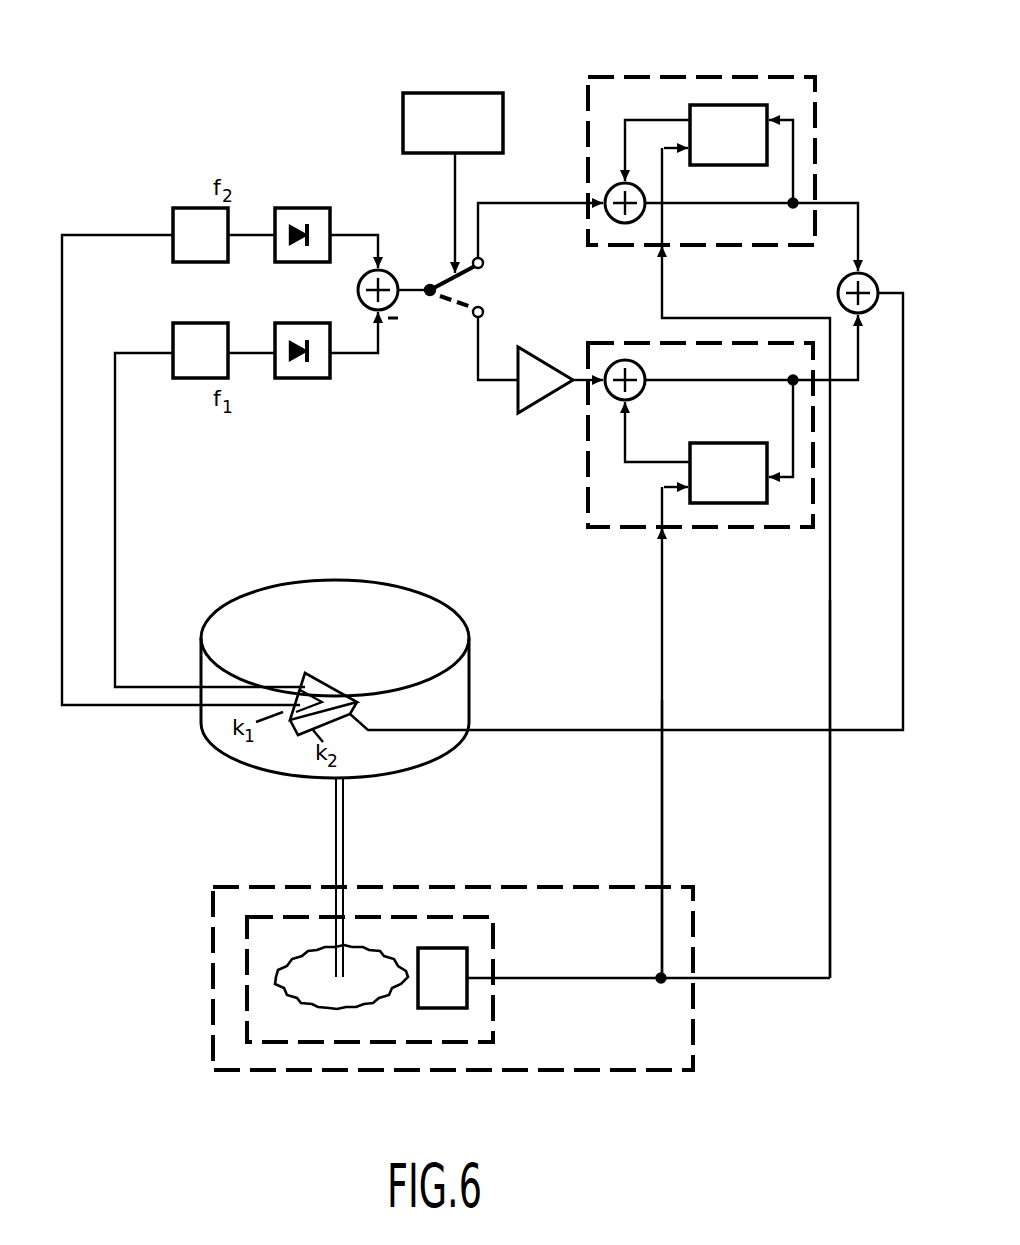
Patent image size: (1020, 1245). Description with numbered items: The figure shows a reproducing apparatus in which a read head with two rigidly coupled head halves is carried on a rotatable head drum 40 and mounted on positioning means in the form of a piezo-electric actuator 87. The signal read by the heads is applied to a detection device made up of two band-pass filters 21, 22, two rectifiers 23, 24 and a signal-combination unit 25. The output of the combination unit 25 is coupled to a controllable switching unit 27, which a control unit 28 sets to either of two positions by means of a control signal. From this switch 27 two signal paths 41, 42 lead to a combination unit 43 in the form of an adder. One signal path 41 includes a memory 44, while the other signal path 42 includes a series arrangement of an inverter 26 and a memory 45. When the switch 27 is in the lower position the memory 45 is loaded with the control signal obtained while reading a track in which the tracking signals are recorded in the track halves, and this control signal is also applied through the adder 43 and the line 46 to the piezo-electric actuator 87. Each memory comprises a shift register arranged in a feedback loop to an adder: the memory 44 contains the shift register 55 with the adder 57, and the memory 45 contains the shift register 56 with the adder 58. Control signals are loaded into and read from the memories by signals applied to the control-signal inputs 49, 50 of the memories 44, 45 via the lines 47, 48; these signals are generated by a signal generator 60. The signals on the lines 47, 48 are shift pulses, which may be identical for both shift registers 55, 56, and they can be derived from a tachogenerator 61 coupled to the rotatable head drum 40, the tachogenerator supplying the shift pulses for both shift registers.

The band-pass filter 21 is at (186, 208).
The band-pass filter 22 is at (185, 380).
The rectifier 23 is at (307, 208).
The rectifier 24 is at (300, 378).
The signal-combination unit 25 is at (392, 276).
The inverter 26 is at (547, 357).
The controllable switching unit 27 is at (458, 310).
The control unit 28 is at (403, 121).
The rotatable head drum 40 is at (320, 582).
The signal path 41 is at (537, 205).
The signal path 42 is at (492, 383).
The combination unit 43 is at (868, 281).
The memory 44 is at (648, 76).
The memory 45 is at (757, 528).
The line 46 is at (757, 731).
The line 47 is at (832, 557).
The line 48 is at (658, 557).
The control-signal input 49 is at (665, 249).
The control-signal input 50 is at (666, 531).
The shift register 55 is at (725, 105).
The shift register 56 is at (713, 443).
The adder 57 is at (618, 189).
The adder 58 is at (643, 368).
The signal generator 60 is at (695, 906).
The tachogenerator 61 is at (497, 960).
The piezo-electric actuator 87 is at (325, 683).